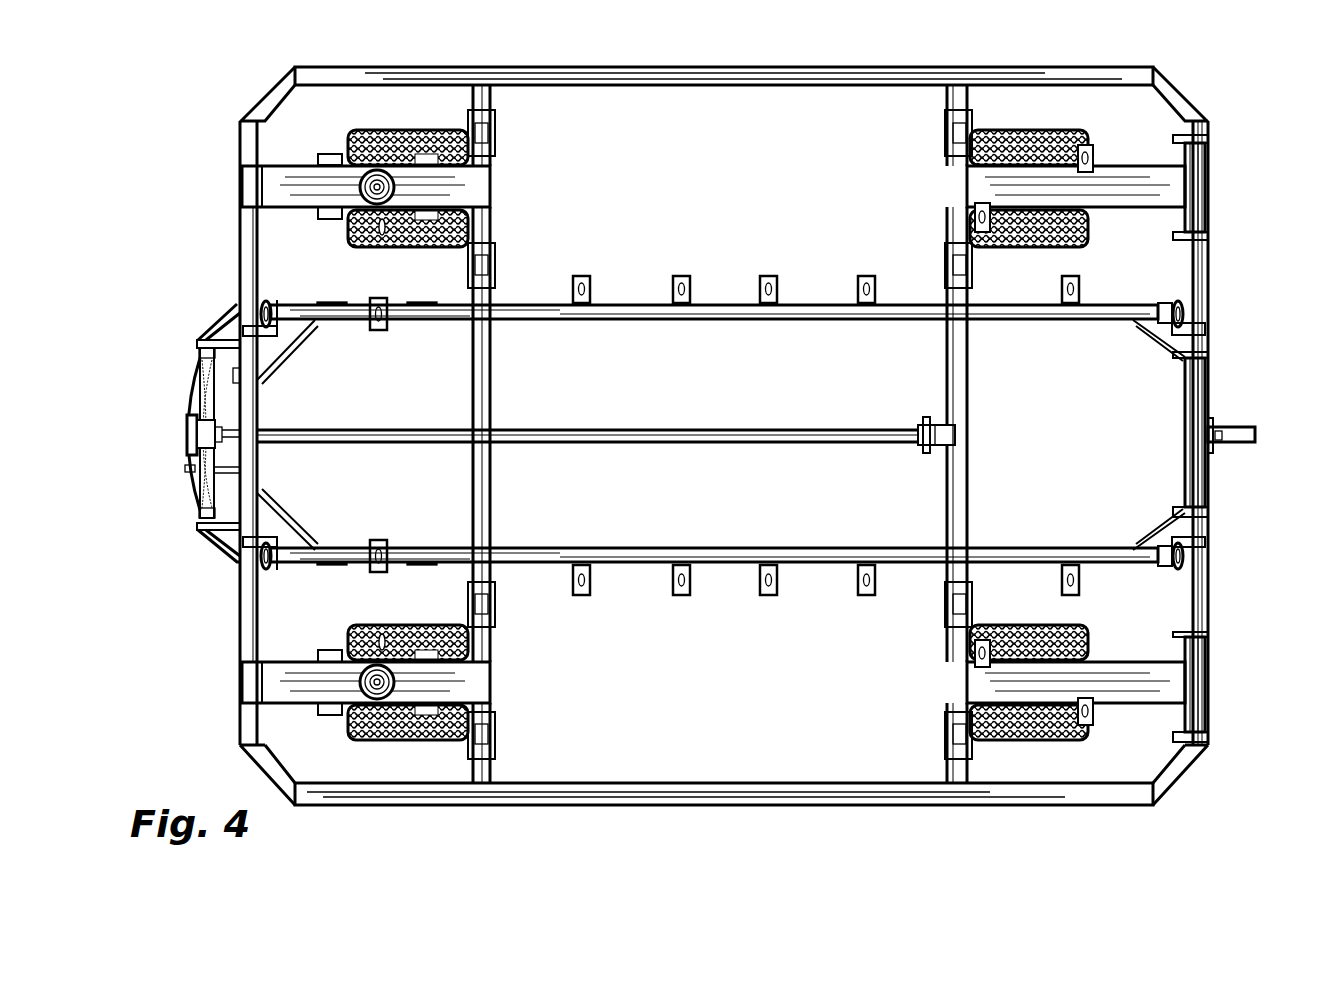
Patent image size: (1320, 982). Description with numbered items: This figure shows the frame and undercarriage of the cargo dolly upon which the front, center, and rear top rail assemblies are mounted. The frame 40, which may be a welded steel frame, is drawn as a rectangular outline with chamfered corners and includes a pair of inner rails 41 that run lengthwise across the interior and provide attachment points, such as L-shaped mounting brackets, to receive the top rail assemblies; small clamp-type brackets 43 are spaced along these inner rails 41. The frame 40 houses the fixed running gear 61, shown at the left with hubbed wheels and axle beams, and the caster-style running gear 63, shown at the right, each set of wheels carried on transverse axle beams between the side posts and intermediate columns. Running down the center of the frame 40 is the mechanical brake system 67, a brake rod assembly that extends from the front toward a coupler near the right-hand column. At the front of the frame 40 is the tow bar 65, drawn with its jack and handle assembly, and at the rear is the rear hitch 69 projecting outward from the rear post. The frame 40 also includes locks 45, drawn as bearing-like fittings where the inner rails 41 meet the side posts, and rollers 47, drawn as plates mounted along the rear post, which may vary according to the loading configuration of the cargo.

The frame 40 is at (783, 806).
The inner rails 41 is at (540, 300).
The clamp bracket 43 is at (680, 597).
The locks 45 is at (265, 557).
The rollers 47 is at (1195, 473).
The fixed running gear 61 is at (382, 742).
The caster-style running gear 63 is at (1018, 742).
The tow bar 65 is at (190, 420).
The mechanical brake system 67 is at (613, 442).
The rear hitch 69 is at (1235, 428).